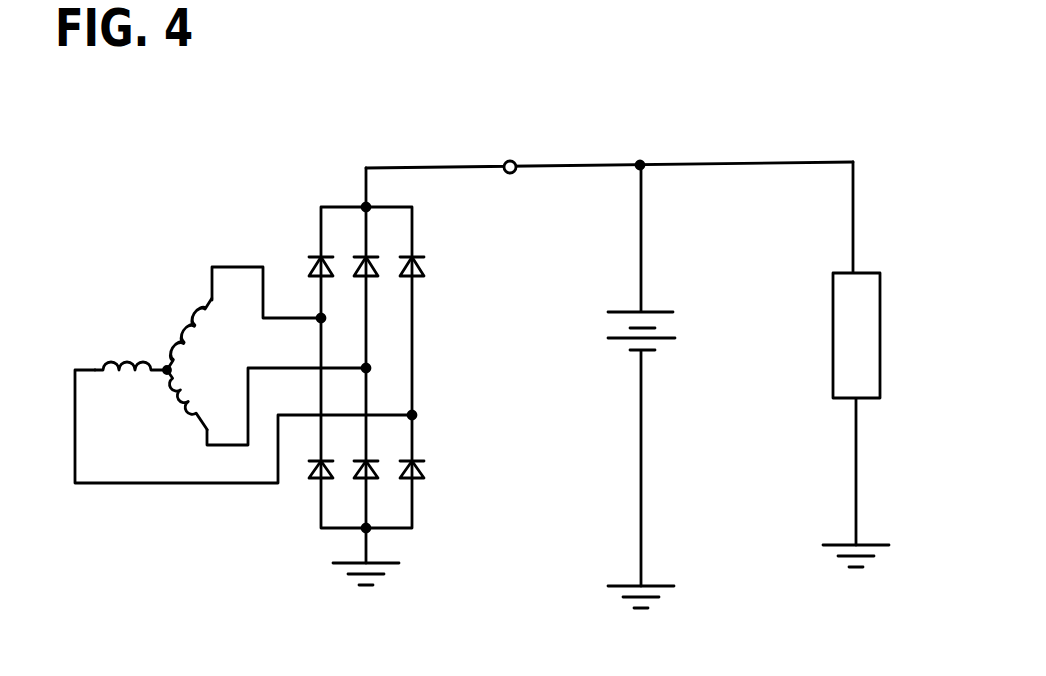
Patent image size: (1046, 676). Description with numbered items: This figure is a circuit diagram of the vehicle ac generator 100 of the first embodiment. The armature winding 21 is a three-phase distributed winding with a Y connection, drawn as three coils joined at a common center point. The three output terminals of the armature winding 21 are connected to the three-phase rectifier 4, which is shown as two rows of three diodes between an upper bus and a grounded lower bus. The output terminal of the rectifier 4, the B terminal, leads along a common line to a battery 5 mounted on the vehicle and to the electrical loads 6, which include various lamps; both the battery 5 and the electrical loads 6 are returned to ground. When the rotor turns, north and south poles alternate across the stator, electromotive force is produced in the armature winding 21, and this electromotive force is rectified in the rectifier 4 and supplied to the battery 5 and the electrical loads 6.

The vehicle AC generator system 100 is at (398, 106).
The three-phase rectifier 4 is at (338, 207).
The armature winding 21 is at (162, 358).
The battery 5 is at (630, 310).
The electrical loads 6 is at (850, 272).